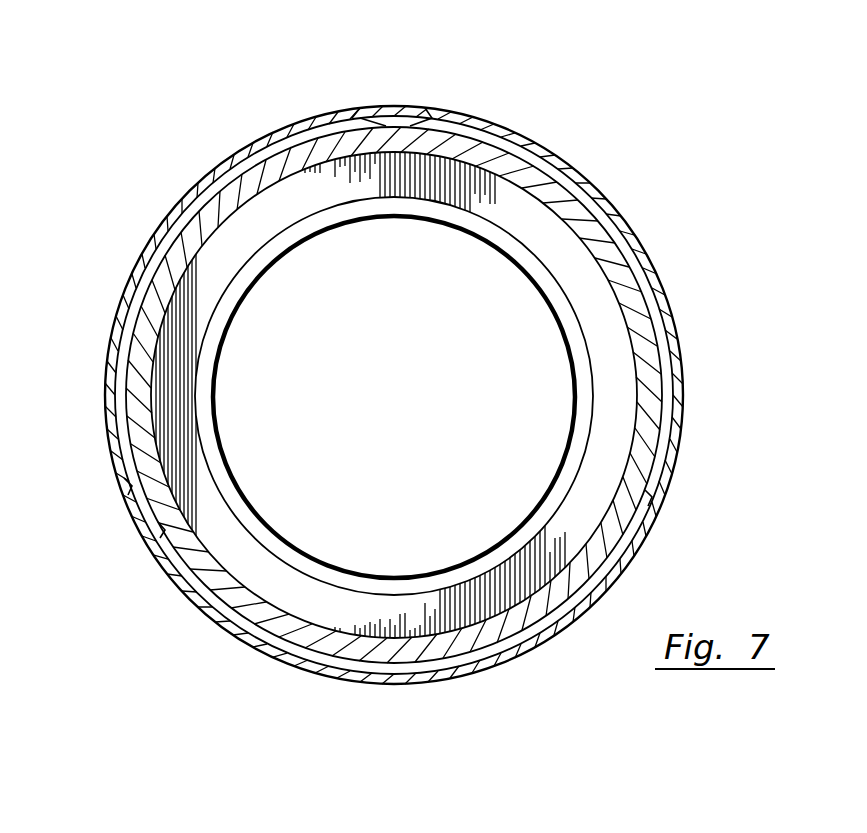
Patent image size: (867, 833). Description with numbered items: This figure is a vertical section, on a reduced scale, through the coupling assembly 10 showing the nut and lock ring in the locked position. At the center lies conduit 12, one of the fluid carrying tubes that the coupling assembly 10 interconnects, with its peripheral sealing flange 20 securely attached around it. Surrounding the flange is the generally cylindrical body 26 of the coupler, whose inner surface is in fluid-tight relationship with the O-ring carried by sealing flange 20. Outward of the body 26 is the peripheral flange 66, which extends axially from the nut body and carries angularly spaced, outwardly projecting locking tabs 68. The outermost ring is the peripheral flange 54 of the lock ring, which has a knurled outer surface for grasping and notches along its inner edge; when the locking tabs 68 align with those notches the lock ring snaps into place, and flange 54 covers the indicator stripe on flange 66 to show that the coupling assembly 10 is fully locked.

The coupling assembly 10 is at (118, 234).
The conduit 12 is at (240, 290).
The peripheral sealing flange 20 is at (560, 270).
The cylindrical body 26 is at (568, 210).
The peripheral flange 54 is at (196, 200).
The peripheral flange 66 is at (645, 266).
The locking tabs 68 is at (384, 122).